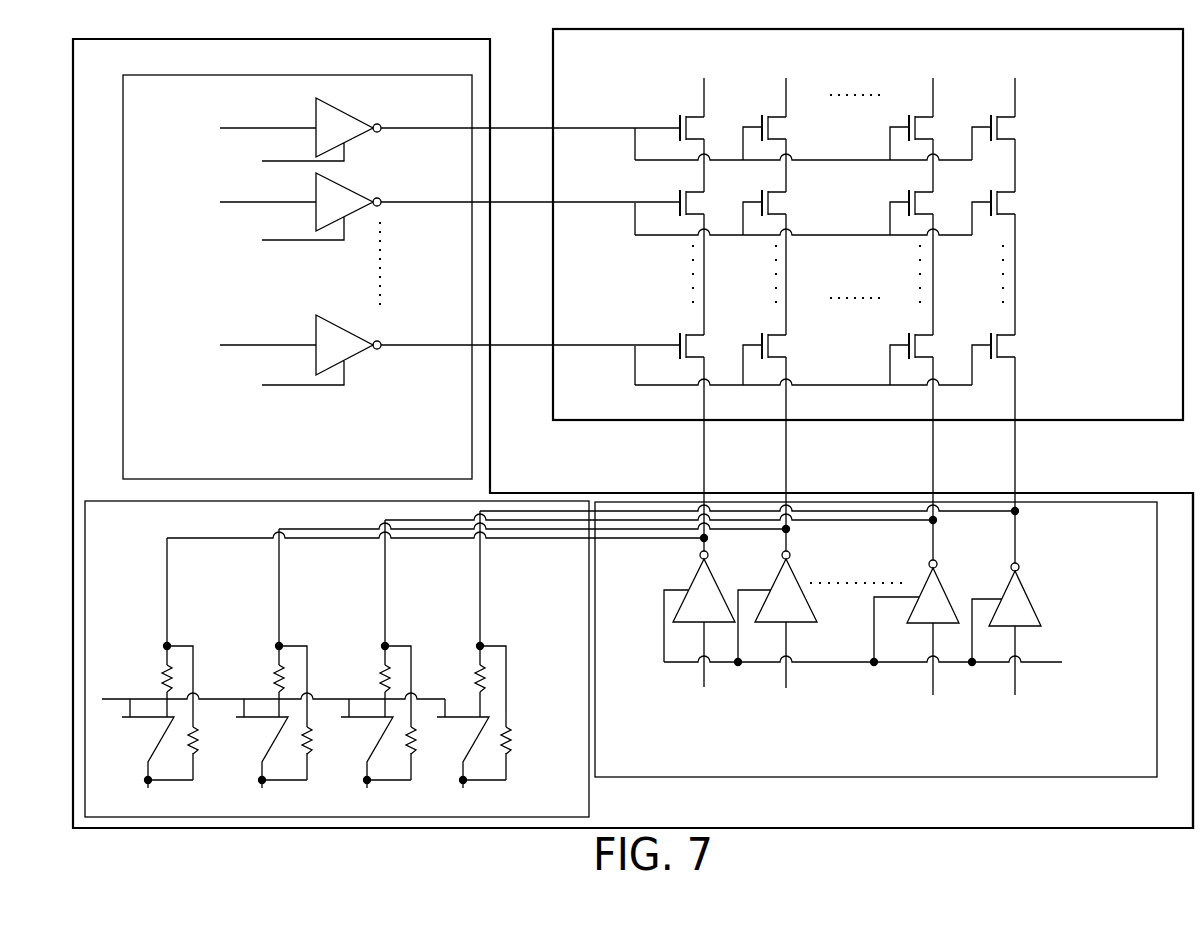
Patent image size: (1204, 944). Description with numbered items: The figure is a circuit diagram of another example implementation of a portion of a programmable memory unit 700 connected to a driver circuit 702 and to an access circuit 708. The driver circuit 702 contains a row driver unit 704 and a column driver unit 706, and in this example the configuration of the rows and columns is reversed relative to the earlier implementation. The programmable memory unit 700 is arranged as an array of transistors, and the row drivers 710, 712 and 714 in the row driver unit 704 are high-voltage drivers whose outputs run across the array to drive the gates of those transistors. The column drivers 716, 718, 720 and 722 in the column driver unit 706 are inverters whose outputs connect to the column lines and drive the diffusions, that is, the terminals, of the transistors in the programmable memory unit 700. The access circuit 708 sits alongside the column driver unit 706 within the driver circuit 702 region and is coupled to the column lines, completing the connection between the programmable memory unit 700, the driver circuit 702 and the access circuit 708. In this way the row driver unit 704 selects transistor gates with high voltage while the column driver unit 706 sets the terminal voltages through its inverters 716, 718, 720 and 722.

The programmable memory unit 700 is at (1170, 69).
The driver circuit 702 is at (1148, 812).
The row driver unit 704 is at (355, 455).
The column driver unit 706 is at (846, 775).
The access circuit 708 is at (265, 533).
The row driver 710 is at (429, 128).
The row driver 712 is at (429, 208).
The row driver 714 is at (429, 349).
The column driver 716 is at (706, 632).
The column driver 718 is at (784, 636).
The column driver 720 is at (925, 640).
The column driver 722 is at (1014, 639).